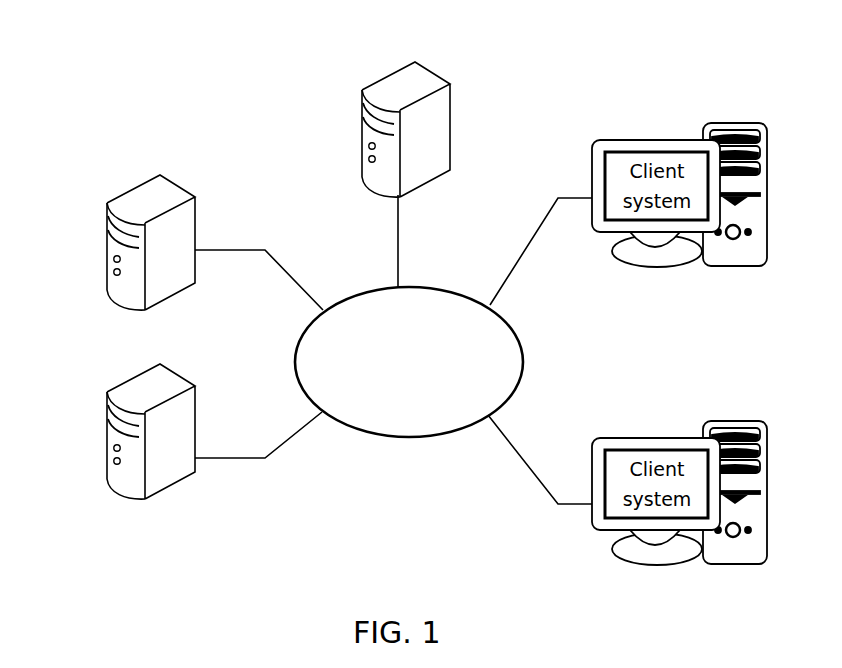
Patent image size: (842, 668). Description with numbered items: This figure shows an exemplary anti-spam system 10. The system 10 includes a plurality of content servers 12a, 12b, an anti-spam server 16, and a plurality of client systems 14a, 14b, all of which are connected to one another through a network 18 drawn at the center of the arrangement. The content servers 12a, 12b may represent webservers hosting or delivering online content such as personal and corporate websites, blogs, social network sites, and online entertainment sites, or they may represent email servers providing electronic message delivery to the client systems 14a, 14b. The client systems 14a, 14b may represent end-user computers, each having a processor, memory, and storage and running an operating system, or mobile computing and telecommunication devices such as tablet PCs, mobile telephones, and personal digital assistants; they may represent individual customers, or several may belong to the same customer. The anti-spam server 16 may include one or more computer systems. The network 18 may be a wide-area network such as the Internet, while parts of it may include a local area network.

The anti-spam system 10 is at (224, 103).
The content server 12a is at (106, 213).
The content server 12b is at (107, 400).
The client system 14a is at (766, 266).
The client system 14b is at (766, 566).
The anti-spam server 16 is at (450, 110).
The network 18 is at (407, 438).